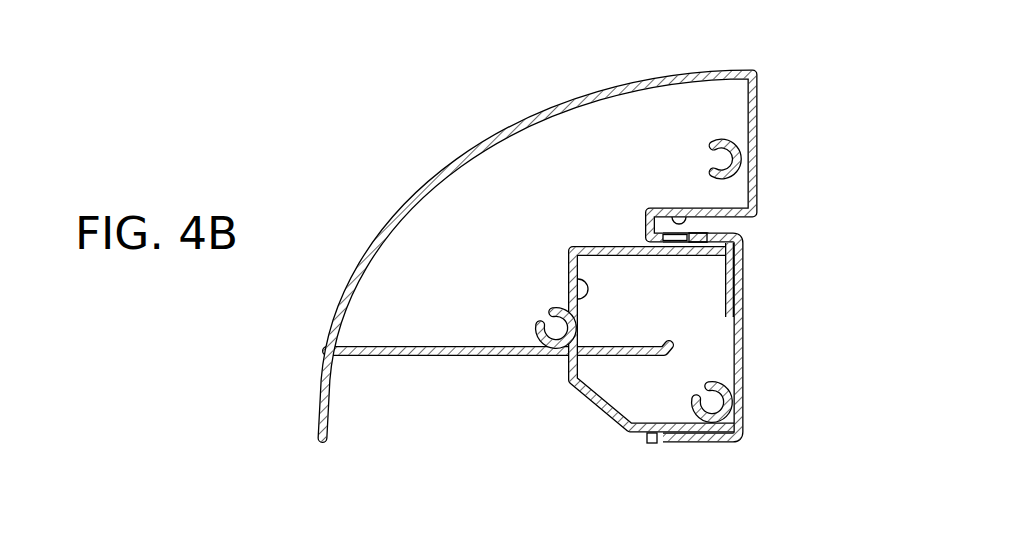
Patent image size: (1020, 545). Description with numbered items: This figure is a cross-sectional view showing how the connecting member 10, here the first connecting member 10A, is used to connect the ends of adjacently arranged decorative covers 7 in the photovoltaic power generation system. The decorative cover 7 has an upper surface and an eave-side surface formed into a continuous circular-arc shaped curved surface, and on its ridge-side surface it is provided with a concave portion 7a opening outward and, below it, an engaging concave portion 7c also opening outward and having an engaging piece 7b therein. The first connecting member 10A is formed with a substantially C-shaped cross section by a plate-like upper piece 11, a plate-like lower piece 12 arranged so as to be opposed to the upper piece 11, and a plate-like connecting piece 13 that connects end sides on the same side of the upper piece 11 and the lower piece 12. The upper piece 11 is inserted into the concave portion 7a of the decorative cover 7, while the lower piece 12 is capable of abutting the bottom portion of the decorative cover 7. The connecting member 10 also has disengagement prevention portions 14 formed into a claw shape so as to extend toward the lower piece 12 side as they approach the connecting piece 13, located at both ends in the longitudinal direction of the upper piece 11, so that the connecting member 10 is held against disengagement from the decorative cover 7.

The decorative cover 7 is at (438, 161).
The concave portion 7a is at (650, 206).
The engaging piece 7b is at (637, 345).
The engaging concave portion 7c is at (574, 280).
The first connecting member 10A is at (769, 369).
The connecting member 10 is at (769, 369).
The upper piece 11 is at (680, 207).
The lower piece 12 is at (695, 443).
The connecting piece 13 is at (745, 375).
The disengagement prevention portion 14 is at (697, 243).